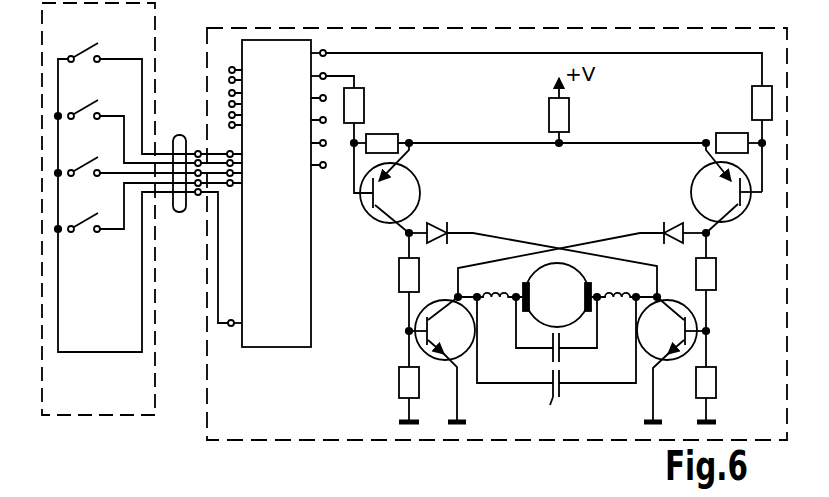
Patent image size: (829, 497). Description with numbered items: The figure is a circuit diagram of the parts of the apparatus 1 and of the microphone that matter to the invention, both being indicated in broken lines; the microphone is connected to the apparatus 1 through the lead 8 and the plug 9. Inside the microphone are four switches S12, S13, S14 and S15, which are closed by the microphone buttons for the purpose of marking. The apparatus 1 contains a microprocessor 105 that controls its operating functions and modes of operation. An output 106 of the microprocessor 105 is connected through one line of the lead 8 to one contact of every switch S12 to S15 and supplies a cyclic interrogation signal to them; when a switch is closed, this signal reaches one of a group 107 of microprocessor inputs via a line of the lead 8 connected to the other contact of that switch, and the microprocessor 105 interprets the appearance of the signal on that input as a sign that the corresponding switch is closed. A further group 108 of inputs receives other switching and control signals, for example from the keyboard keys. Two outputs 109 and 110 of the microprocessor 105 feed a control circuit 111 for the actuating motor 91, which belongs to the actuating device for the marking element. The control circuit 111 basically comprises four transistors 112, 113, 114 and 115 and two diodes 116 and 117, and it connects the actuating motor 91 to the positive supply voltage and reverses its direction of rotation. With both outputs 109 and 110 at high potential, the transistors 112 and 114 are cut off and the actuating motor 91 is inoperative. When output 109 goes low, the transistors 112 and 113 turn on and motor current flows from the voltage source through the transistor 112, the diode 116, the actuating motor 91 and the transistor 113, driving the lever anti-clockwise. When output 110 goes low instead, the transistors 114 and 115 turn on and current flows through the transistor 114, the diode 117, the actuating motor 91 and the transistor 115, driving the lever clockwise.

The apparatus 1 is at (574, 26).
The lead 8 is at (173, 211).
The plug 9 is at (198, 200).
The actuating motor 91 is at (567, 281).
The microprocessor 105 is at (262, 352).
The output of the microprocessor 106 is at (230, 328).
The group of microprocessor inputs 107 is at (226, 146).
The further group of inputs 108 is at (227, 66).
The output of the microprocessor 109 is at (321, 50).
The output of the microprocessor 110 is at (326, 74).
The control circuit 111 is at (391, 360).
The transistor 112 is at (731, 208).
The transistor 113 is at (689, 322).
The transistor 114 is at (376, 219).
The transistor 115 is at (427, 317).
The diode 116 is at (673, 222).
The diode 117 is at (442, 224).
The switch S12 is at (78, 54).
The switch S13 is at (78, 111).
The switch S14 is at (78, 168).
The switch S15 is at (78, 224).